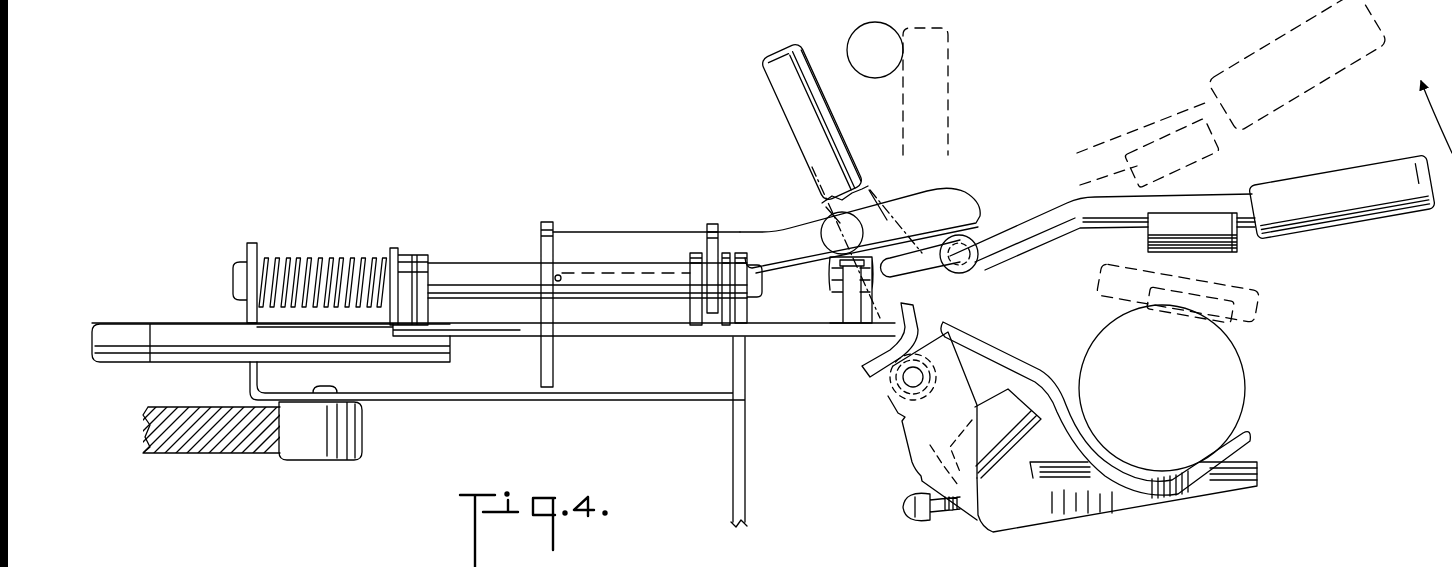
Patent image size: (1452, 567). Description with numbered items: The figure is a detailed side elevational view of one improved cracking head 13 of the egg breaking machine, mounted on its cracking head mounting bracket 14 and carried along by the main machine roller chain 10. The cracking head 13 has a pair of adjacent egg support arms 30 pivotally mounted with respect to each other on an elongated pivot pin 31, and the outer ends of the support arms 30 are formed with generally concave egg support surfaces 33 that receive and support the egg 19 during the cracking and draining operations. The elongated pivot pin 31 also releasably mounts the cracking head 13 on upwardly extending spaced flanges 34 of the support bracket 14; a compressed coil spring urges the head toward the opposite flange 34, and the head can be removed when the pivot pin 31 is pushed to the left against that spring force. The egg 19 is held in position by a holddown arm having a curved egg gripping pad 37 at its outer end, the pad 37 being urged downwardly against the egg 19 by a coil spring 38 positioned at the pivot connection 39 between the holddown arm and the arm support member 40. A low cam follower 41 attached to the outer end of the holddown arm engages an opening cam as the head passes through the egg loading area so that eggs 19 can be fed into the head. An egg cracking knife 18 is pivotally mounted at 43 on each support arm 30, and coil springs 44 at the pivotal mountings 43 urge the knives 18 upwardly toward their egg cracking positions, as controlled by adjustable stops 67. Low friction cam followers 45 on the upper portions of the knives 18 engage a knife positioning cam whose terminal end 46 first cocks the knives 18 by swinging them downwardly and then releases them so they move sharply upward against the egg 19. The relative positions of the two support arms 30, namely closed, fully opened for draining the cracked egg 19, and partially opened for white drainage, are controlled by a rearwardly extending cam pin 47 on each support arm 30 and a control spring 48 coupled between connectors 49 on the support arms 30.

The main machine roller chain 10 is at (353, 435).
The cracking head 13 is at (1030, 142).
The cracking head mounting bracket 14 is at (623, 397).
The egg cracking knife 18 is at (1097, 497).
The egg 19 is at (1246, 378).
The egg support arm 30 is at (623, 330).
The elongated pivot pin 31 is at (481, 273).
The concave egg support surface 33 is at (1253, 467).
The flange 34 is at (247, 243).
The egg gripping pad 37 is at (1237, 250).
The coil spring 38 is at (957, 277).
The pivot connection 39 is at (983, 266).
The arm support member 40 is at (628, 243).
The low cam follower 41 is at (1317, 217).
The pivotal mounting 43 is at (907, 377).
The coil spring 44 is at (900, 430).
The low friction cam follower 45 is at (798, 115).
The terminal end of cam 46 is at (877, 77).
The cam pin 47 is at (162, 330).
The control spring 48 is at (832, 307).
The connector 49 is at (848, 317).
The adjustable stop 67 is at (1005, 457).